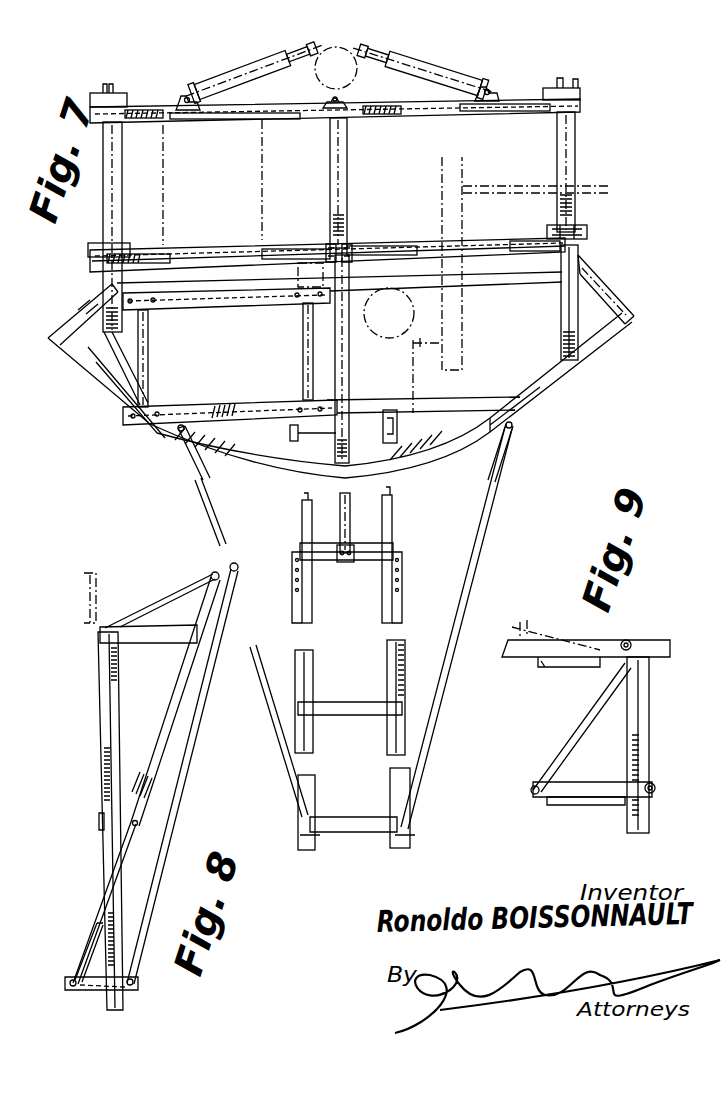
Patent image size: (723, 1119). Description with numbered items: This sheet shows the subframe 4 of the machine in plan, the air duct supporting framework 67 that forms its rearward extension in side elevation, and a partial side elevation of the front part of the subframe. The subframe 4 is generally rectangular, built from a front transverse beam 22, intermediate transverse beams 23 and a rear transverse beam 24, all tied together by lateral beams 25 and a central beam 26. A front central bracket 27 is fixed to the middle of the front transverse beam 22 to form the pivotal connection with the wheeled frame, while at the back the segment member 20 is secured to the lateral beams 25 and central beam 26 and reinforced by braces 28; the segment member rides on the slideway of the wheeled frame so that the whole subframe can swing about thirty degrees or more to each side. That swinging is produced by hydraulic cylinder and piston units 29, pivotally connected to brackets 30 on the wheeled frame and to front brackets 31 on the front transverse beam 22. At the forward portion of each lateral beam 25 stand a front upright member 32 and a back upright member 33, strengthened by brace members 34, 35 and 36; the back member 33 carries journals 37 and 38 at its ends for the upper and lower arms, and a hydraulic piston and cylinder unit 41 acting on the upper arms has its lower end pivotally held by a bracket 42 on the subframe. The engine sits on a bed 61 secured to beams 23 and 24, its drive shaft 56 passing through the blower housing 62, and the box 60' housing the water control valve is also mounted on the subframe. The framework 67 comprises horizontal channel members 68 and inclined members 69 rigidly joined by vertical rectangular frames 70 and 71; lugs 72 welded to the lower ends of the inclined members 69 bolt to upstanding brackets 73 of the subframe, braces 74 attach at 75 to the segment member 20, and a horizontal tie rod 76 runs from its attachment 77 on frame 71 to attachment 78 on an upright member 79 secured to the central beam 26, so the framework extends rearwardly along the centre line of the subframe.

In FIG. 7, the subframe 4 is at (581, 138).
In FIG. 7, the segment member 20 is at (550, 393).
In FIG. 7, the front transverse beam 22 is at (283, 118).
In FIG. 7, the intermediate transverse beams 23 is at (213, 240).
In FIG. 7, the rear transverse beam 24 is at (330, 403).
In FIG. 7, the lateral beams 25 is at (122, 213).
In FIG. 9, the lateral beams 25 is at (649, 730).
In FIG. 7, the central beam 26 is at (347, 190).
In FIG. 7, the front central bracket 27 is at (346, 100).
In FIG. 7, the braces 28 is at (72, 296).
In FIG. 7, the hydraulic cylinder and piston units 29 is at (228, 62).
In FIG. 7, the brackets 30 is at (336, 47).
In FIG. 7, the front brackets 31 is at (190, 95).
In FIG. 7, the front upright member 32 is at (582, 93).
In FIG. 9, the front upright member 32 is at (560, 640).
In FIG. 9, the back upright member 33 is at (588, 782).
In FIG. 9, the brace member 34 is at (556, 667).
In FIG. 7, the brace member 35 is at (556, 165).
In FIG. 9, the brace member 35 is at (575, 740).
In FIG. 9, the brace member 36 is at (578, 805).
In FIG. 7, the journal 37 is at (546, 232).
In FIG. 9, the journal 37 is at (532, 786).
In FIG. 9, the journal 38 is at (654, 785).
In FIG. 9, the hydraulic piston and cylinder unit 41 is at (575, 636).
In FIG. 7, the bracket 42 is at (560, 78).
In FIG. 9, the bracket 42 is at (629, 640).
In FIG. 7, the drive shaft 56 is at (438, 322).
In FIG. 7, the box 60' is at (229, 182).
In FIG. 7, the bed 61 is at (228, 303).
In FIG. 7, the blower housing 62 is at (414, 318).
In FIG. 8, the air duct supporting framework 67 is at (180, 754).
In FIG. 8, the channel members 68 is at (100, 740).
In FIG. 8, the inclined members 69 is at (162, 722).
In FIG. 8, the vertical rectangular frame 70 is at (90, 985).
In FIG. 8, the vertical rectangular frame 71 is at (138, 632).
In FIG. 8, the lugs 72 is at (210, 570).
In FIG. 7, the upstanding brackets 73 is at (290, 432).
In FIG. 8, the braces 74 is at (179, 509).
In FIG. 7, the attachment point 75 is at (178, 440).
In FIG. 8, the tie rod 76 is at (350, 505).
In FIG. 8, the attachment point 77 is at (345, 562).
In FIG. 7, the attachment point 78 is at (352, 250).
In FIG. 7, the upright member 79 is at (327, 248).